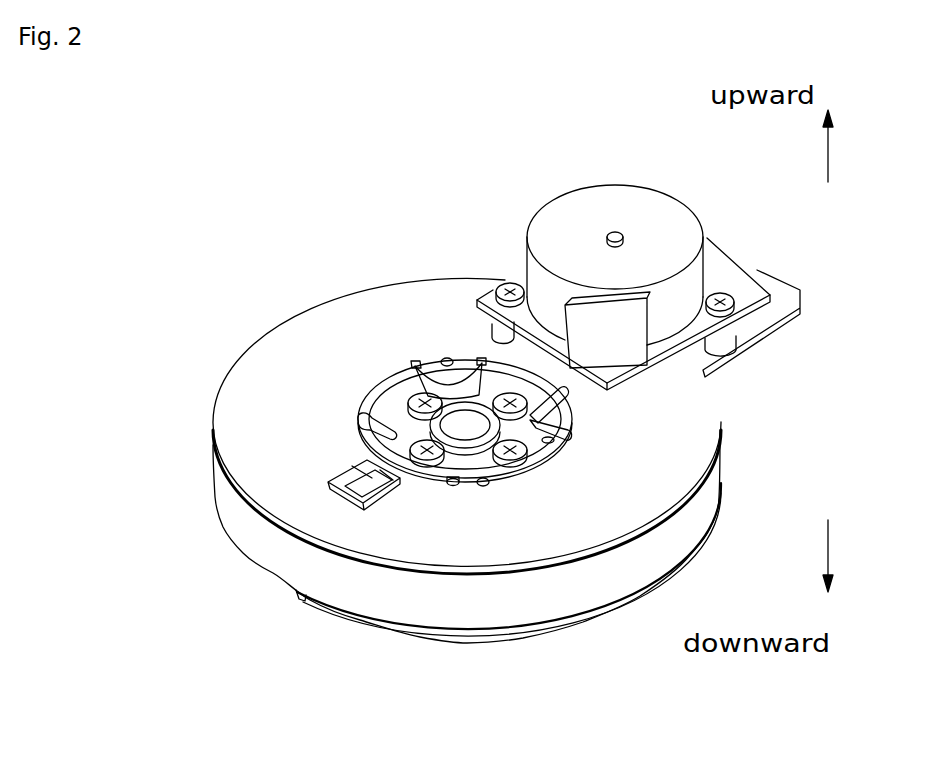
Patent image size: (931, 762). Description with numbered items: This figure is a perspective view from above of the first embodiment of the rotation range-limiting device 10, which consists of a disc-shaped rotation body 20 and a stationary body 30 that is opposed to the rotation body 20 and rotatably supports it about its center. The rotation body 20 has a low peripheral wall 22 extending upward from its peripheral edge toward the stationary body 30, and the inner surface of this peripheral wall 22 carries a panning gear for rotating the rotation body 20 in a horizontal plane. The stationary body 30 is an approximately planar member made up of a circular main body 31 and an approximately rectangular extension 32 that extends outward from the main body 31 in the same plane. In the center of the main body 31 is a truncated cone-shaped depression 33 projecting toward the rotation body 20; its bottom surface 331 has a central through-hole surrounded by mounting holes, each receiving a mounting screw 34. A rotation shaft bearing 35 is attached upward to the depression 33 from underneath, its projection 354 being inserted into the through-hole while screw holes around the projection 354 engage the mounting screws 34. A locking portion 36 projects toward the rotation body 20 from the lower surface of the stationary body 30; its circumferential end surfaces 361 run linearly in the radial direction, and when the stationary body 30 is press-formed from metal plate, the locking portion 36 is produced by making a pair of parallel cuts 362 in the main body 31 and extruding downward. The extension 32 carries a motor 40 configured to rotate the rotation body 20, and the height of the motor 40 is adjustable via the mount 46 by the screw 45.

The rotation range-limiting device 10 is at (160, 284).
The rotation body 20 is at (246, 585).
The peripheral wall 22 is at (332, 574).
The stationary body 30 is at (282, 296).
The circular main body 31 is at (257, 382).
The extension 32 is at (787, 302).
The depression 33 is at (450, 484).
The bottom surface 331 is at (453, 481).
The mounting screw 34 is at (514, 456).
The rotation shaft bearing 35 is at (465, 449).
The projection 354 is at (465, 428).
The locking portion 36 is at (333, 493).
The circumferential end surfaces 361 is at (336, 474).
The cuts 362 is at (352, 467).
The motor 40 is at (548, 228).
The screw 45 is at (508, 288).
The mount 46 is at (753, 278).